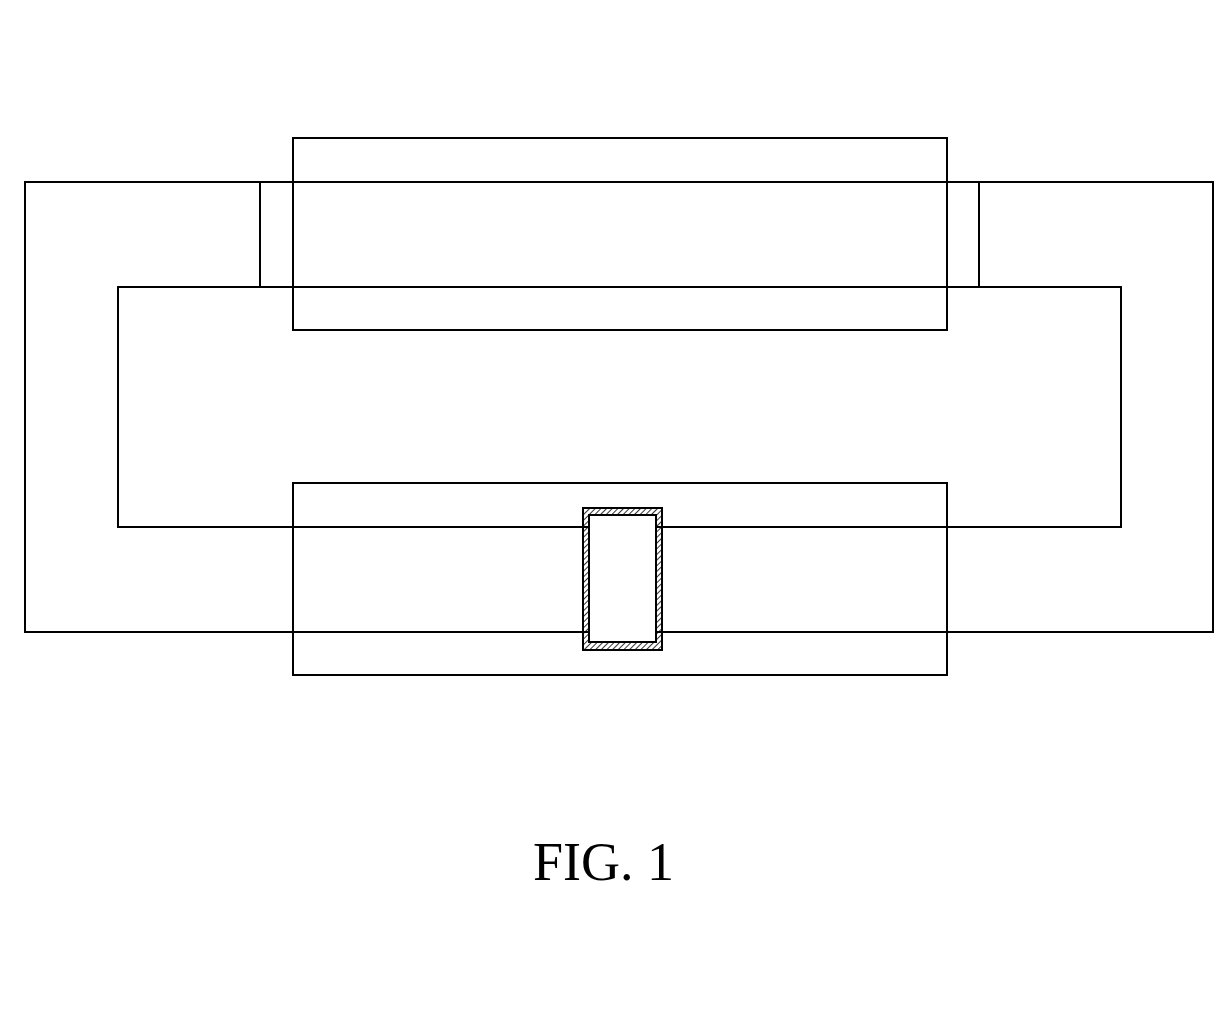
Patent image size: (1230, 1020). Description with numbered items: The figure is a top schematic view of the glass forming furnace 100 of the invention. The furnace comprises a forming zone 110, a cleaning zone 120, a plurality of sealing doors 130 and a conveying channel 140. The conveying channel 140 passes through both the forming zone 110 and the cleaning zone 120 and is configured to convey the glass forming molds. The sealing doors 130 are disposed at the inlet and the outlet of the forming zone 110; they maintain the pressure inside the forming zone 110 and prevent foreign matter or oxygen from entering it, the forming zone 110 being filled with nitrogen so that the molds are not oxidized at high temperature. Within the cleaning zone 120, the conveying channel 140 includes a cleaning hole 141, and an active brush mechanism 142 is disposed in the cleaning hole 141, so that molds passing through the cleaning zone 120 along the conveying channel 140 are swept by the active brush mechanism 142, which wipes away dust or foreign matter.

The glass forming furnace 100 is at (1162, 746).
The forming zone 110 is at (447, 138).
The cleaning zone 120 is at (628, 675).
The sealing doors 130 is at (277, 182).
The conveying channel 140 is at (123, 632).
The cleaning hole 141 is at (583, 518).
The active brush mechanism 142 is at (637, 513).